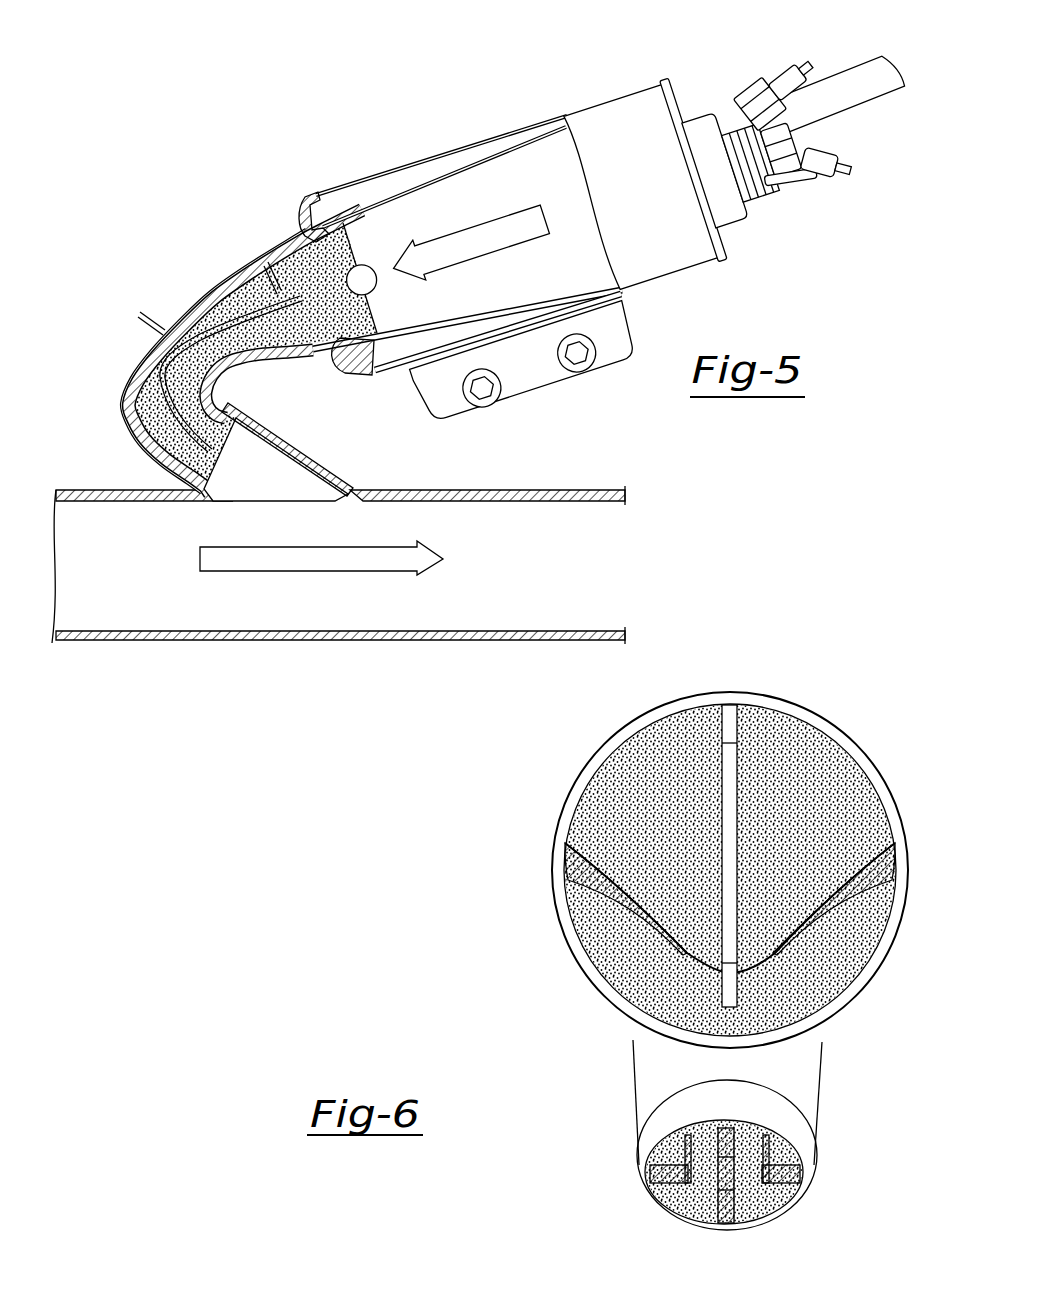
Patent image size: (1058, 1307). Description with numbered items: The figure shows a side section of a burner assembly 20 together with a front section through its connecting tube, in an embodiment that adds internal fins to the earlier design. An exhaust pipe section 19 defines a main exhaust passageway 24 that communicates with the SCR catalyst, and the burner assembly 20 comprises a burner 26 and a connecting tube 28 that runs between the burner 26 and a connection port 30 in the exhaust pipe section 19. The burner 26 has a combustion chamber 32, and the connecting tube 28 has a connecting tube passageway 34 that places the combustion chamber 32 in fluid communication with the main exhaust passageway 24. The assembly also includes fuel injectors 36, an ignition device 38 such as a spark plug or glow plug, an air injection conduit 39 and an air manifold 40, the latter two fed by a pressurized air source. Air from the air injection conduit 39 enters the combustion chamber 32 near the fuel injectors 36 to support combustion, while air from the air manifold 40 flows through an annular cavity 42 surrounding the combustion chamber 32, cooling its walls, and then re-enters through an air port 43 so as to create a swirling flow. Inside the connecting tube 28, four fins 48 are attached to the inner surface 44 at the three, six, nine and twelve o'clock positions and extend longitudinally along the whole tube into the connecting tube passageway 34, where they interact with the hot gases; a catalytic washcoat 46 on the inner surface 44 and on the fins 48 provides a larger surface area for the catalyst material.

In FIG. 5, the exhaust pipe section 19 is at (103, 636).
In FIG. 5, the main exhaust passageway 24 is at (517, 596).
In FIG. 5, the burner assembly 20 is at (224, 175).
In FIG. 5, the burner 26 is at (607, 140).
In FIG. 5, the connecting tube 28 is at (126, 362).
In FIG. 6, the connecting tube 28 is at (548, 953).
In FIG. 5, the connection port 30 is at (267, 479).
In FIG. 5, the combustion chamber 32 is at (512, 198).
In FIG. 5, the connecting tube passageway 34 is at (242, 304).
In FIG. 5, the fuel injector 36 is at (798, 76).
In FIG. 5, the ignition device 38 is at (793, 150).
In FIG. 5, the air injection conduit 39 is at (790, 197).
In FIG. 5, the air manifold 40 is at (865, 88).
In FIG. 5, the annular cavity 42 is at (340, 204).
In FIG. 5, the air port 43 is at (378, 287).
In FIG. 5, the inner surface 44 is at (167, 367).
In FIG. 6, the inner surface 44 is at (670, 993).
In FIG. 5, the catalytic washcoat 46 is at (157, 440).
In FIG. 6, the catalytic washcoat 46 is at (777, 755).
In FIG. 5, the fin 48 is at (277, 272).
In FIG. 6, the fin 48 is at (729, 726).